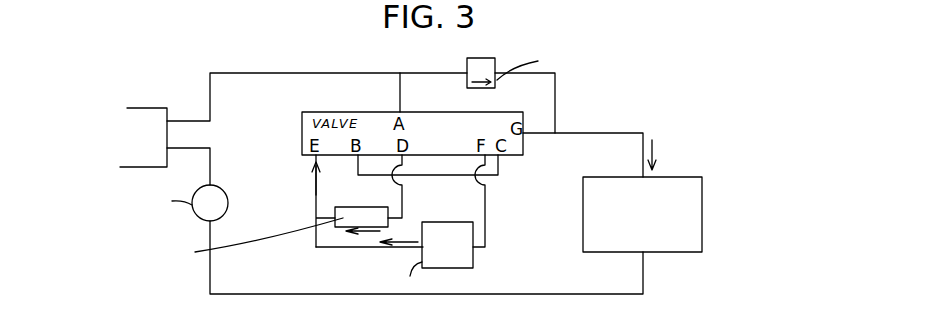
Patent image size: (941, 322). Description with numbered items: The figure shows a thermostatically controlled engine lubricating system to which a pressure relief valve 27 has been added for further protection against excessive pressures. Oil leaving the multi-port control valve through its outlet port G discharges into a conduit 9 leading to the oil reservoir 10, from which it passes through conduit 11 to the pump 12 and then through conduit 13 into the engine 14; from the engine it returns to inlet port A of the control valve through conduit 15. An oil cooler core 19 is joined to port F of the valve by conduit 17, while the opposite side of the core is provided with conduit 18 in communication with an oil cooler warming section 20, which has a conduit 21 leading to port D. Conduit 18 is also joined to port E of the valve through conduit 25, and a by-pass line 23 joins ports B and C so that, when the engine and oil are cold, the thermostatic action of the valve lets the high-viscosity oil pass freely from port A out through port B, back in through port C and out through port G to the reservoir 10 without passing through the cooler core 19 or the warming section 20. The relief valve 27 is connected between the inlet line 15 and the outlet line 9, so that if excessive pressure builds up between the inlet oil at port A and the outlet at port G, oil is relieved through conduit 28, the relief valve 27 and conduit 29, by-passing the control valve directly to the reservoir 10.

The conduit 9 is at (596, 133).
The oil reservoir 10 is at (690, 218).
The conduit 11 is at (272, 294).
The pump 12 is at (233, 197).
The conduit 13 is at (211, 170).
The engine 14 is at (140, 114).
The conduit 15 is at (307, 75).
The conduit 17 is at (486, 206).
The conduit 18 is at (373, 247).
The oil cooler core 19 is at (462, 262).
The oil cooler warming section 20 is at (380, 213).
The conduit 21 is at (402, 202).
The by-pass line 23 is at (416, 177).
The conduit 25 is at (316, 190).
The pressure relief valve 27 is at (487, 76).
The conduit 28 is at (452, 73).
The conduit 29 is at (555, 108).